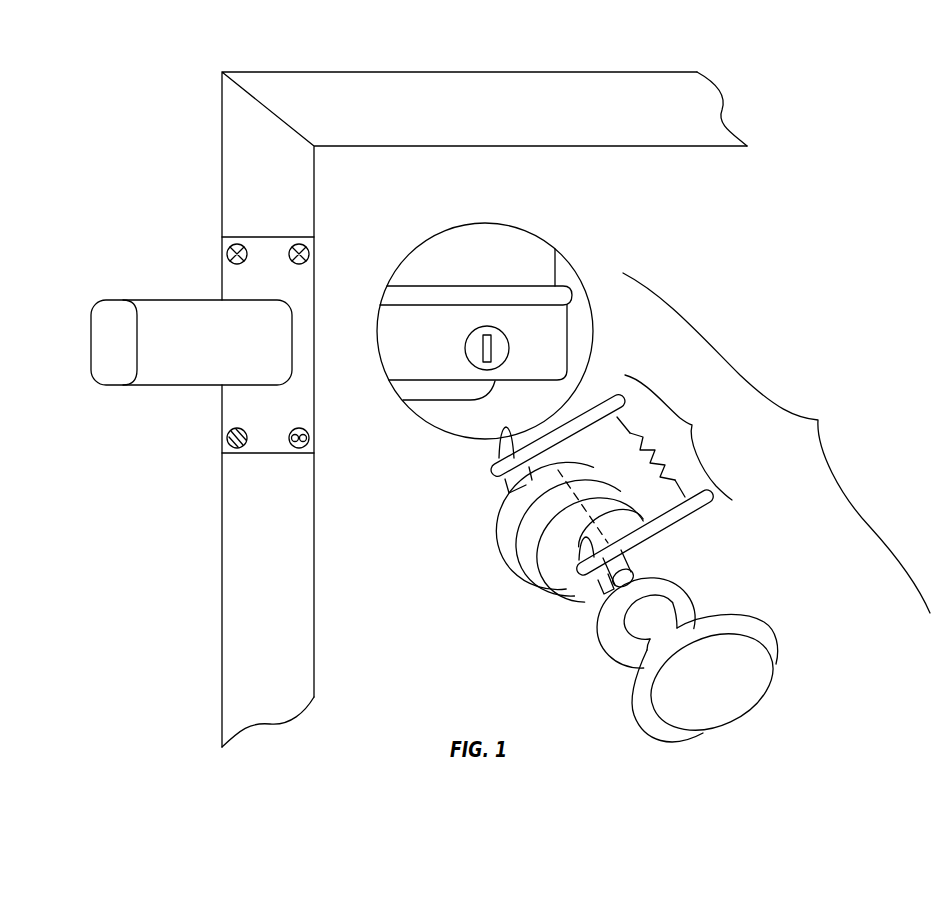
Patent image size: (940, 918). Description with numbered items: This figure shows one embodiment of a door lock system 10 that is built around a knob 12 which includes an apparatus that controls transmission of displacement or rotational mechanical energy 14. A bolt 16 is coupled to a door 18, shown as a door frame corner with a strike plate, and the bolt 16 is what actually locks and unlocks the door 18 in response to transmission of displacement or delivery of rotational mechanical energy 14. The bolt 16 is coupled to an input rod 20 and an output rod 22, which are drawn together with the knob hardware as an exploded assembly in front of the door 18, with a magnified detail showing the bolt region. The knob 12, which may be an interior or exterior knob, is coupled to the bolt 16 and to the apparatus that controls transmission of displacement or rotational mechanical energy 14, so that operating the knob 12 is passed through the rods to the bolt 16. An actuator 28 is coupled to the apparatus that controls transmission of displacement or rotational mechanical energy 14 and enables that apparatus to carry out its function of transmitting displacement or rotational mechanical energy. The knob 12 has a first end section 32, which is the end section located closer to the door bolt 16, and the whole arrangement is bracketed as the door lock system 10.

The door lock system 10 is at (776, 443).
The knob 12 is at (723, 697).
The apparatus that controls transmission of displacement or rotational mechanical en 14 is at (674, 437).
The bolt 16 is at (150, 398).
The door 18 is at (640, 88).
The input rod 20 is at (597, 577).
The output rod 22 is at (488, 453).
The actuator 28 is at (645, 488).
The first end section 32 is at (688, 608).